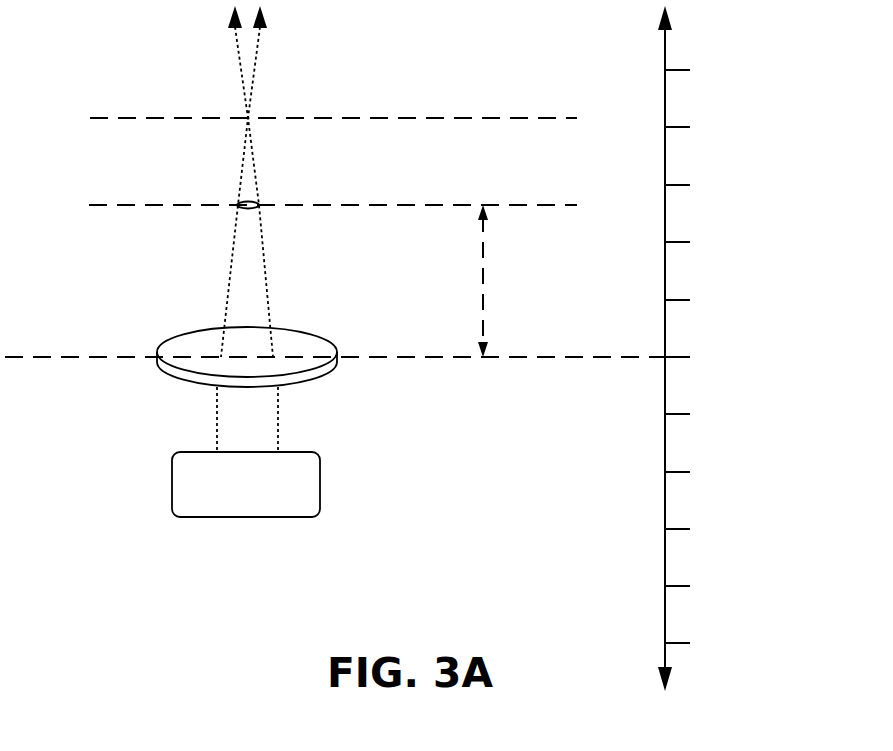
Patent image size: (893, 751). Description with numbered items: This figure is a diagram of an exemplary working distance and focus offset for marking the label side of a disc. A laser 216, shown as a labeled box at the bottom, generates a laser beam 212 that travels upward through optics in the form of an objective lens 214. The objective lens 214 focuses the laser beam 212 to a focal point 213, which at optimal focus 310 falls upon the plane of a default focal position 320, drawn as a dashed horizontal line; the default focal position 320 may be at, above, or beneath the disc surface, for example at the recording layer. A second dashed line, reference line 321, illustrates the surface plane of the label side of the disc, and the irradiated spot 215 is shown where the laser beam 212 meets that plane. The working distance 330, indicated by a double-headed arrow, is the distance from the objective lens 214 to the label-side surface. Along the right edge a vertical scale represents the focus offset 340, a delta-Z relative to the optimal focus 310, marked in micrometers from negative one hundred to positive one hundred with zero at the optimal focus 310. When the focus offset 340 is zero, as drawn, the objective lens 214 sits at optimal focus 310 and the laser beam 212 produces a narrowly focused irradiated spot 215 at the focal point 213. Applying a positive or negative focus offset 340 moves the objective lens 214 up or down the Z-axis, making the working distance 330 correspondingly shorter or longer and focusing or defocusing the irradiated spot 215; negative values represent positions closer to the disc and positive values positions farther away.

The laser beam 212 is at (230, 253).
The focal point 213 is at (250, 121).
The objective lens 214 is at (185, 352).
The irradiated spot 215 is at (243, 197).
The laser 216 is at (234, 505).
The optimal focus 310 is at (547, 357).
The default focal position 320 is at (510, 118).
The reference line 321 is at (512, 205).
The working distance 330 is at (483, 267).
The focus offset 340 is at (665, 50).